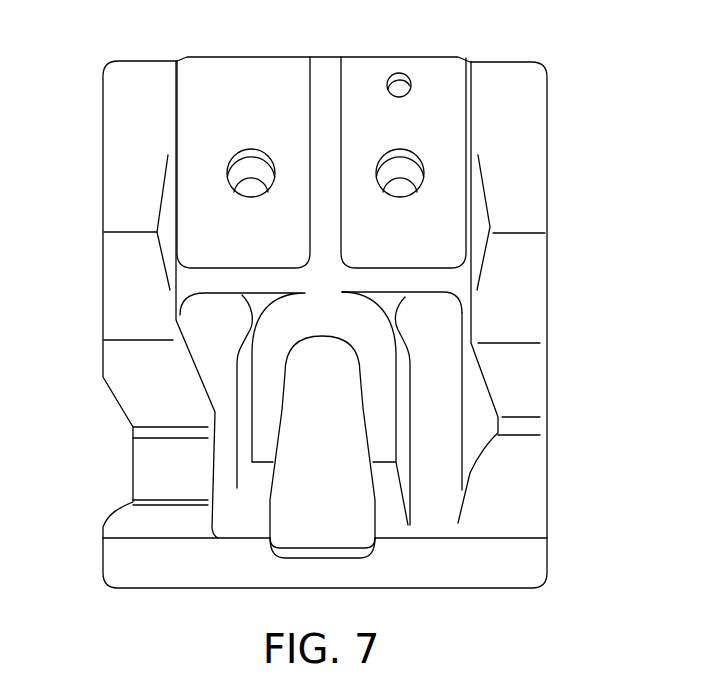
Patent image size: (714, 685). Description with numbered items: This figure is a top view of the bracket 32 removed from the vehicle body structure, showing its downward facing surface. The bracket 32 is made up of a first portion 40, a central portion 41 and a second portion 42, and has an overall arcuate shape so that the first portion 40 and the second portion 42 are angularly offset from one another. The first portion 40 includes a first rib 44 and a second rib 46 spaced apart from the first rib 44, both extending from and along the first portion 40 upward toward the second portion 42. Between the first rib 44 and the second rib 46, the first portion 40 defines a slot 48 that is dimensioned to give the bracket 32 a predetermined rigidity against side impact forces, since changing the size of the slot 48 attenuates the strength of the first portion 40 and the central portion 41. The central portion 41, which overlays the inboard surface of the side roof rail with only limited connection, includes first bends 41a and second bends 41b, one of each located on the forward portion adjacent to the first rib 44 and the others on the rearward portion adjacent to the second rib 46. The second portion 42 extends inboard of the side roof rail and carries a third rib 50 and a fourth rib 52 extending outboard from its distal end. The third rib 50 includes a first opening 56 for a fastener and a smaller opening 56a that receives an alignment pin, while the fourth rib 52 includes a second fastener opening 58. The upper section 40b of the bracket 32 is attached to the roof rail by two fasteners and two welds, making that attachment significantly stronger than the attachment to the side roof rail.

The bracket 32 is at (527, 32).
The first portion 40 is at (162, 463).
The upper section 40b is at (513, 143).
The central portion 41 is at (135, 357).
The first bends 41a is at (132, 338).
The second bends 41b is at (143, 432).
The second portion 42 is at (130, 158).
The first rib 44 is at (425, 353).
The second rib 46 is at (217, 375).
The slot 48 is at (363, 408).
The third rib 50 is at (443, 85).
The fourth rib 52 is at (208, 82).
The first opening 56 is at (379, 182).
The smaller opening 56a is at (412, 83).
The second fastener opening 58 is at (269, 190).